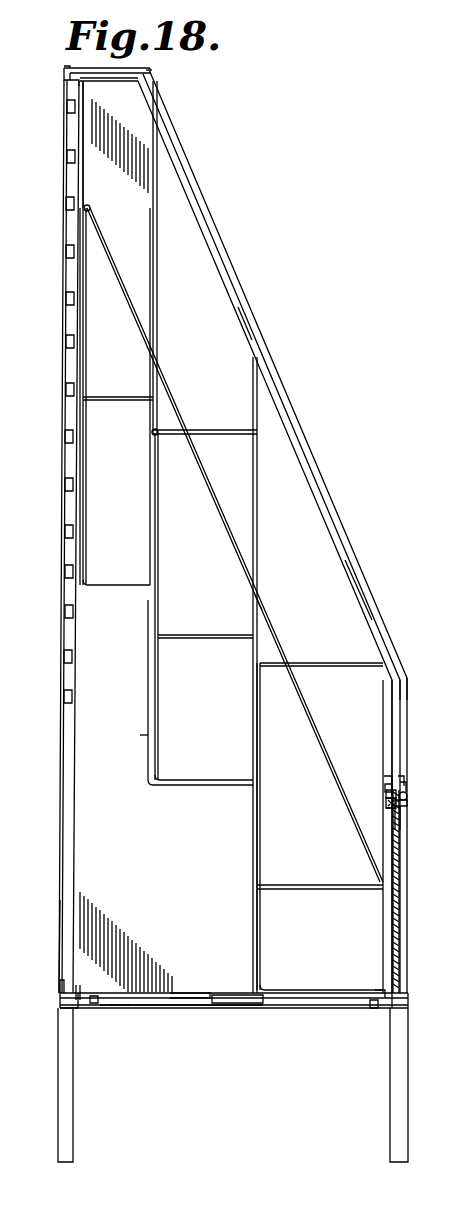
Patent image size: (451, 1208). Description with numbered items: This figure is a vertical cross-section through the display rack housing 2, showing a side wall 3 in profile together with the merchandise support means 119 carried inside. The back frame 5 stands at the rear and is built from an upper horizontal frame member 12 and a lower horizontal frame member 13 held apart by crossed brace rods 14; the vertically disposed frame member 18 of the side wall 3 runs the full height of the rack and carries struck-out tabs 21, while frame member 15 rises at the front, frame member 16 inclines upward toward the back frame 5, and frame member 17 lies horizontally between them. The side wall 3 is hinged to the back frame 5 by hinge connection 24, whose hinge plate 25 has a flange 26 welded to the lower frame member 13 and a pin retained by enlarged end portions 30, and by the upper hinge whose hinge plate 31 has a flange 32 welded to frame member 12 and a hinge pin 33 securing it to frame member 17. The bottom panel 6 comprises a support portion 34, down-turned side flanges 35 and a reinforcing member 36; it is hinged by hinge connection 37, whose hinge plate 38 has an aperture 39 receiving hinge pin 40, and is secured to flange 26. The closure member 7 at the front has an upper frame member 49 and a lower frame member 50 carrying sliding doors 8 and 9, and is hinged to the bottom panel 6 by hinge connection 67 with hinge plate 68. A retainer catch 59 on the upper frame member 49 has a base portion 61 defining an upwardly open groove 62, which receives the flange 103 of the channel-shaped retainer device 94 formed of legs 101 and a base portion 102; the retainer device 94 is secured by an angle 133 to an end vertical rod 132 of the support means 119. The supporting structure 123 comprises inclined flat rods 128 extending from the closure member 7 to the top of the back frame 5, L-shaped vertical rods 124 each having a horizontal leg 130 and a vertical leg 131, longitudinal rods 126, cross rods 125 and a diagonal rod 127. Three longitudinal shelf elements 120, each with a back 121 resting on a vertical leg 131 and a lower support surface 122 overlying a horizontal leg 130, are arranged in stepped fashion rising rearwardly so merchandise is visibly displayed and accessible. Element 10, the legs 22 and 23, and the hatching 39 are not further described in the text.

The housing 2 is at (266, 346).
The side wall 3 is at (364, 590).
The back frame 5 is at (64, 232).
The bottom panel 6 is at (224, 993).
The closure member 7 is at (401, 828).
The sliding door 8 is at (399, 912).
The sliding door 9 is at (400, 940).
The front wall 10 is at (409, 686).
The upper horizontal frame member 12 is at (64, 84).
The lower horizontal frame member 13 is at (62, 1000).
The brace rods 14 is at (60, 815).
The frame member 15 is at (408, 750).
The frame member 16 is at (232, 290).
The frame member 17 is at (116, 84).
The frame member 18 is at (68, 718).
The tabs 21 is at (74, 655).
The rear leg 22 is at (73, 1135).
The front leg 23 is at (404, 1080).
The hinge connection 24 is at (118, 69).
The hinge plate 25 is at (116, 1008).
The flange 26 is at (62, 1008).
The enlarged end portions 30 is at (116, 1010).
The hinge plate 31 is at (136, 70).
The flange 32 is at (64, 68).
The hinge pin 33 is at (152, 74).
The support portion 34 is at (204, 992).
The down-turned side flanges 35 is at (180, 1008).
The reinforcing member 36 is at (240, 1008).
The hinge connection 37 is at (62, 992).
The hinge plate 38 is at (80, 993).
The aperture 39 is at (126, 942).
The hinge pin 40 is at (97, 998).
The upper frame member 49 is at (408, 802).
The lower frame member 50 is at (405, 1010).
The retainer catch 59 is at (388, 802).
The base portion 61 is at (390, 812).
The groove 62 is at (385, 786).
The hinge connection 67 is at (374, 1008).
The hinge plate 68 is at (378, 990).
The retainer device 94 is at (407, 792).
The legs 101 is at (404, 776).
The base portion 102 is at (407, 784).
The flange 103 is at (388, 792).
The merchandise support means 119 is at (345, 540).
The longitudinal shelf elements 120 is at (87, 527).
The back 121 is at (87, 459).
The lower support surface 122 is at (120, 584).
The supporting structure 123 is at (254, 598).
The vertical rods 124 is at (157, 296).
The cross rods 125 is at (202, 430).
The longitudinal rods 126 is at (89, 207).
The diagonal rods 127 is at (164, 380).
The flat rods 128 is at (334, 492).
The horizontal leg 130 is at (168, 786).
The vertical leg 131 is at (147, 737).
The end vertical rod 132 is at (382, 717).
The angle 133 is at (73, 87).